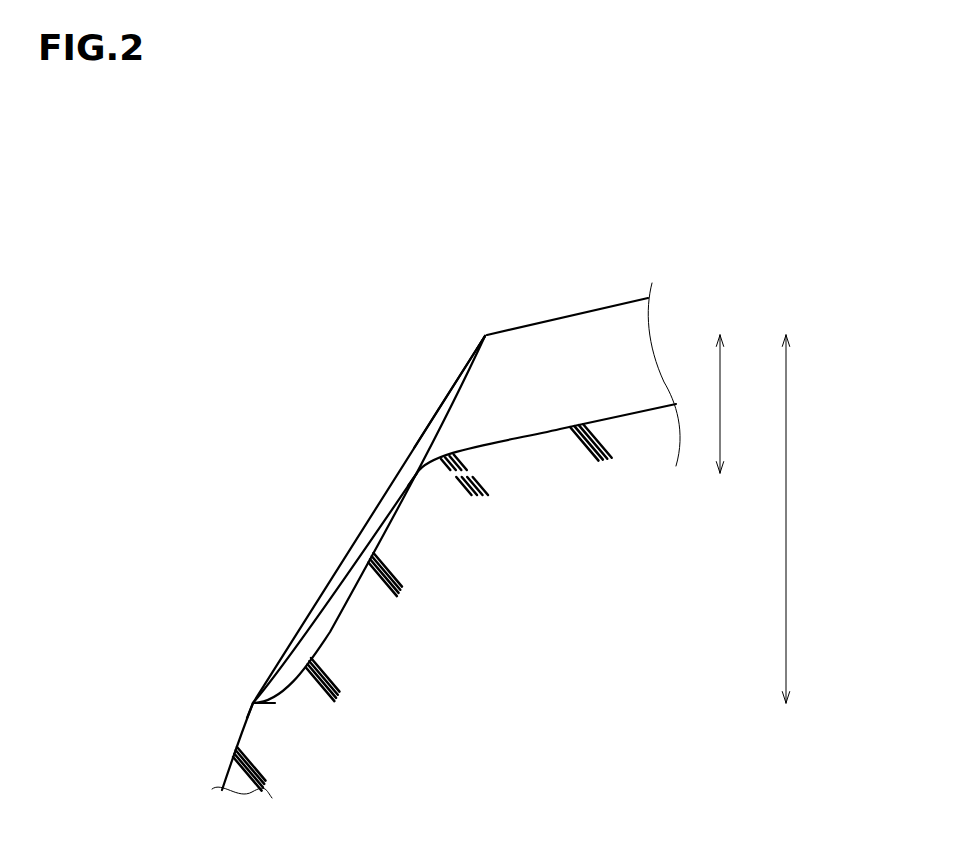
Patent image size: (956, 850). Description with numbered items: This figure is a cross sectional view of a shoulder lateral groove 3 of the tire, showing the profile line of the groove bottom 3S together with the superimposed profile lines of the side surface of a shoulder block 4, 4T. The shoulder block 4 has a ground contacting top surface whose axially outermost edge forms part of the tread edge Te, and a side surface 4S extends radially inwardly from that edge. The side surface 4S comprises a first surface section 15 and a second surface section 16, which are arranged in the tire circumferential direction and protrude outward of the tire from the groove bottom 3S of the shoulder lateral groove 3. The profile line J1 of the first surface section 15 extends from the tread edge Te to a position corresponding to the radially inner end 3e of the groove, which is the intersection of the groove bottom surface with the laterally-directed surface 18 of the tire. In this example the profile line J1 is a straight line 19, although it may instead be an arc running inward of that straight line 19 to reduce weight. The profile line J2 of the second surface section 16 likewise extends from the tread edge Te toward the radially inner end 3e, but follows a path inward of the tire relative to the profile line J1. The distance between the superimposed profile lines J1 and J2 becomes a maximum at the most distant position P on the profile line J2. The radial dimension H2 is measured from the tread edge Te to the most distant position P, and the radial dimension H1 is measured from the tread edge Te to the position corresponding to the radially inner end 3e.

The shoulder block 4 is at (548, 355).
The tip portion of blade 4T is at (567, 315).
The tread edge Te is at (474, 328).
The straight line 19 is at (451, 389).
The first surface section 15 is at (347, 519).
The profile line of the first surface section J1 is at (361, 534).
The second surface section 16 is at (297, 588).
The profile line of the second surface section J2 is at (332, 593).
The side surface 4S is at (326, 477).
The most distant position P is at (407, 474).
The shoulder lateral groove 3 is at (321, 519).
The groove bottom 3S is at (323, 638).
The radially inner end 3e is at (241, 701).
The laterally-directed surface 18 is at (241, 733).
The radial dimension H1 is at (741, 404).
The radial dimension H2 is at (806, 519).